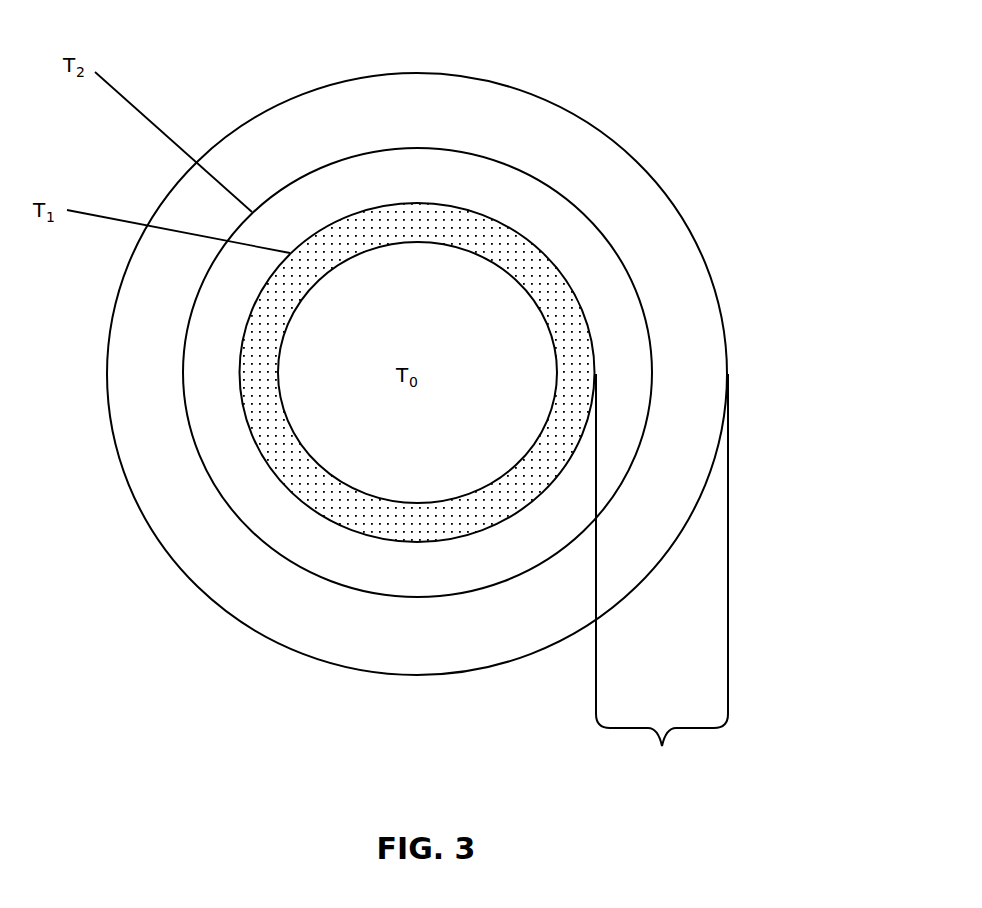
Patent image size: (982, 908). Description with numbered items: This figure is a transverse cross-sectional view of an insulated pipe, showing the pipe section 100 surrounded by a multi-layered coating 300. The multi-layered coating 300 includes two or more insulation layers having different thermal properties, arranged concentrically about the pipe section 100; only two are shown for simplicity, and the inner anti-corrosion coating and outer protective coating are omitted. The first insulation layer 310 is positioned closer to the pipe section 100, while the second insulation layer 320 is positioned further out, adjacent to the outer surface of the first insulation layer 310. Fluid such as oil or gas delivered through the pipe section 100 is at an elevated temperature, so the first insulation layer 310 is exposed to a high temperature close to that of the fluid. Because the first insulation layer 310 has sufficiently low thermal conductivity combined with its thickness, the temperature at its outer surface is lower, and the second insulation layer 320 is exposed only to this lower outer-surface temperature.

The second insulation layer 320 is at (537, 150).
The first insulation layer 310 is at (546, 233).
The pipe section 100 is at (567, 315).
The multi-layered coating 300 is at (662, 576).